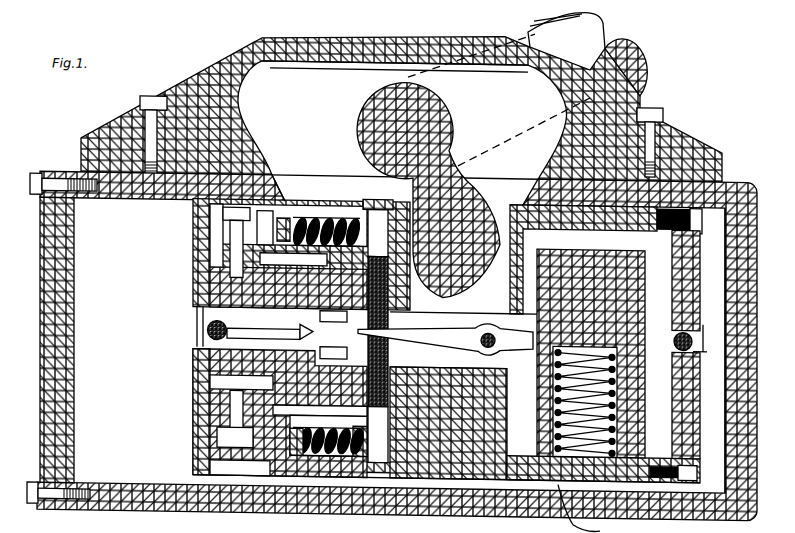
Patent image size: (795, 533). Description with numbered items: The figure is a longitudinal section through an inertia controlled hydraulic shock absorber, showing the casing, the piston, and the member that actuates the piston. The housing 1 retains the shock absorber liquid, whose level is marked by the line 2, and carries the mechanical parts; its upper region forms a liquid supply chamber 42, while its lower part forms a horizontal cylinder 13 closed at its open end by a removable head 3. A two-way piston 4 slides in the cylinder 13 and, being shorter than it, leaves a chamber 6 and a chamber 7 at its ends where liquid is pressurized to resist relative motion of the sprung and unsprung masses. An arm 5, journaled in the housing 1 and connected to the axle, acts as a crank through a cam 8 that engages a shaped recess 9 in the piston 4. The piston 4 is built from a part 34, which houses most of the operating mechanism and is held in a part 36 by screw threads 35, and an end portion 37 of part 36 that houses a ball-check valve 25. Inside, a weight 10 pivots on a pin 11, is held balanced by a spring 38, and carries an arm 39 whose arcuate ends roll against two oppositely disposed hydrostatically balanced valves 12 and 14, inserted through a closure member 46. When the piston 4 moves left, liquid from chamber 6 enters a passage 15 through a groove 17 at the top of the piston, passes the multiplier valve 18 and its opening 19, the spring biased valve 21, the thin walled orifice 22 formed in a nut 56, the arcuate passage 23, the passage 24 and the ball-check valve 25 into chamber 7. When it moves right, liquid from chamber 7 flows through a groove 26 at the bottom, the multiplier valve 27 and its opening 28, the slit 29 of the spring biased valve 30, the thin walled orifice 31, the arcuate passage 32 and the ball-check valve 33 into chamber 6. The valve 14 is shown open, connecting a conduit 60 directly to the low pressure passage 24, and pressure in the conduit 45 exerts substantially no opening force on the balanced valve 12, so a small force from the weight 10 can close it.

The housing 1 is at (97, 135).
The liquid level line 2 is at (306, 73).
The removable head 3 is at (68, 391).
The two-way piston 4 is at (479, 309).
The arm 5 is at (640, 92).
The chamber 6 is at (138, 313).
The chamber 7 is at (724, 266).
The cam 8 is at (447, 282).
The recess 9 is at (513, 293).
The weight 10 is at (608, 296).
The pin 11 is at (496, 332).
The hydrostatically balanced valve 12 is at (373, 330).
The horizontal cylinder 13 is at (108, 488).
The hydrostatically balanced valve 14 is at (380, 353).
The passage 15 is at (198, 207).
The groove 17 is at (278, 201).
The multiplier valve 18 is at (215, 273).
The opening 19 is at (266, 178).
The spring biased valve 21 is at (330, 213).
The thin walled orifice 22 is at (352, 212).
The inclined or arcuate passage 23 is at (270, 330).
The passage 24 is at (472, 362).
The ball-check valve 25 is at (672, 348).
The groove 26 is at (467, 482).
The multiplier valve 27 is at (208, 400).
The opening 28 is at (233, 461).
The slit 29 is at (360, 453).
The spring biased valve 30 is at (297, 453).
The thin walled orifice 31 is at (376, 439).
The inclined or arcuate passage 32 is at (328, 349).
The ball-check valve 33 is at (211, 346).
The piston part 34 is at (283, 313).
The screw threads 35 is at (382, 473).
The piston part 36 is at (459, 409).
The end portion 37 is at (676, 236).
The spring 38 is at (600, 418).
The arm 39 is at (445, 334).
The liquid supply chamber 42 is at (272, 70).
The conduit 45 is at (220, 284).
The closure member 46 is at (378, 208).
The nut 56 is at (347, 212).
The conduit 60 is at (215, 385).